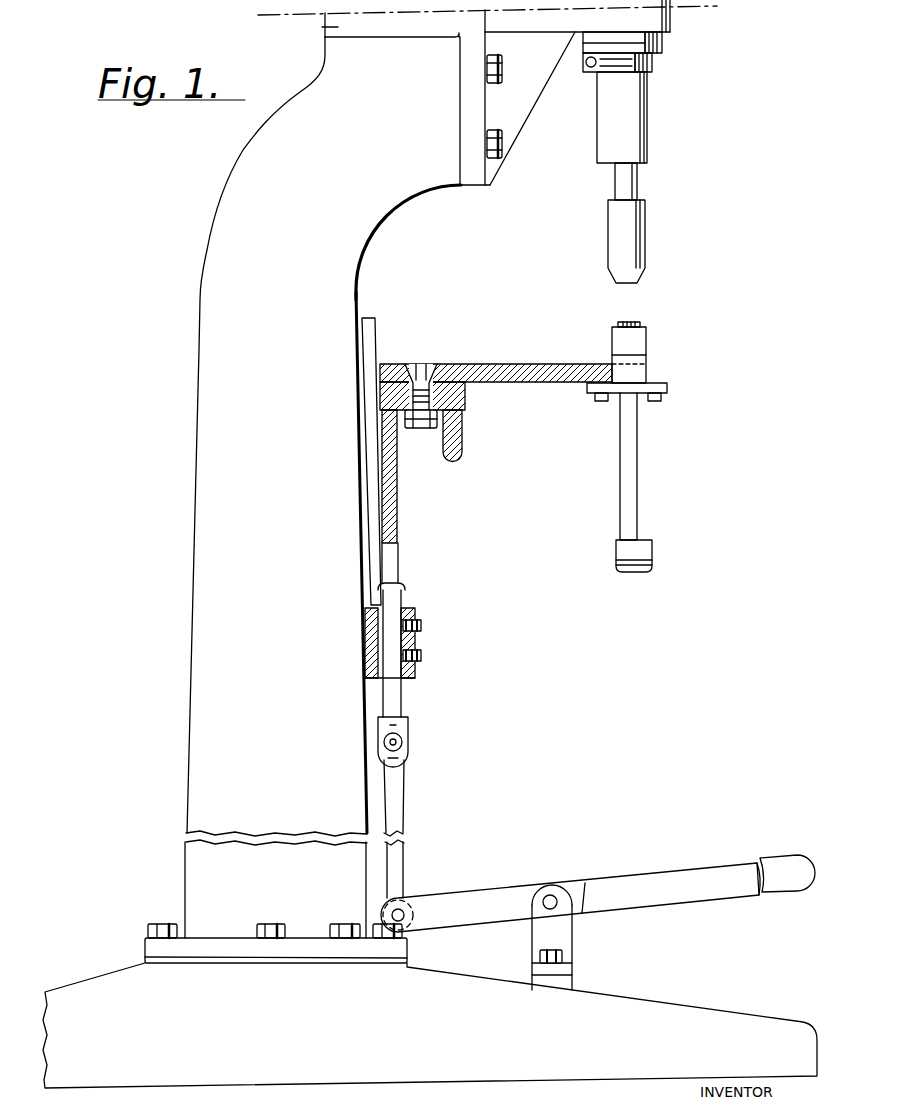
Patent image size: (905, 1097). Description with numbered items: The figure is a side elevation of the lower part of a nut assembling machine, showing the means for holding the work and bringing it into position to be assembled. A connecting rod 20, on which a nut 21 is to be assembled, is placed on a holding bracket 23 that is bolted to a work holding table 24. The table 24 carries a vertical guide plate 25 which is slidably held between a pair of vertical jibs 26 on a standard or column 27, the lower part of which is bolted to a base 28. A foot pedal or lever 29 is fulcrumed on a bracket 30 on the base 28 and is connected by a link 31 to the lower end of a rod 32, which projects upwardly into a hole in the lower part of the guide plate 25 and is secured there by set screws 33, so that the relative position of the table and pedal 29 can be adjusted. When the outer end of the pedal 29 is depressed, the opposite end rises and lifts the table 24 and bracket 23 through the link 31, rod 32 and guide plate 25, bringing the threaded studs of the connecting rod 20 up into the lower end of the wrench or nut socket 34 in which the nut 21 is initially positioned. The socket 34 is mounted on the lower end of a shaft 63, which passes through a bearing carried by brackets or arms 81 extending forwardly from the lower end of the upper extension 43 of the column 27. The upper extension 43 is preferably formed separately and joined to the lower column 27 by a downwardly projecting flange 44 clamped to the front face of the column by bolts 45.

The connecting rod 20 is at (638, 486).
The nut 21 is at (647, 330).
The holding bracket 23 is at (540, 364).
The work holding table 24 is at (463, 440).
The vertical guide plate 25 is at (398, 520).
The vertical jibs 26 is at (371, 337).
The standard or column 27 is at (323, 485).
The base 28 is at (430, 1006).
The foot pedal or lever 29 is at (683, 872).
The bracket 30 is at (563, 945).
The link 31 is at (401, 807).
The rod 32 is at (400, 705).
The set screws 33 is at (421, 656).
The wrench or nut socket 34 is at (628, 240).
The upper extension 43 is at (322, 28).
The flange 44 is at (482, 186).
The bolts 45 is at (494, 84).
The shaft 63 is at (625, 176).
The brackets or arms 81 is at (672, 20).